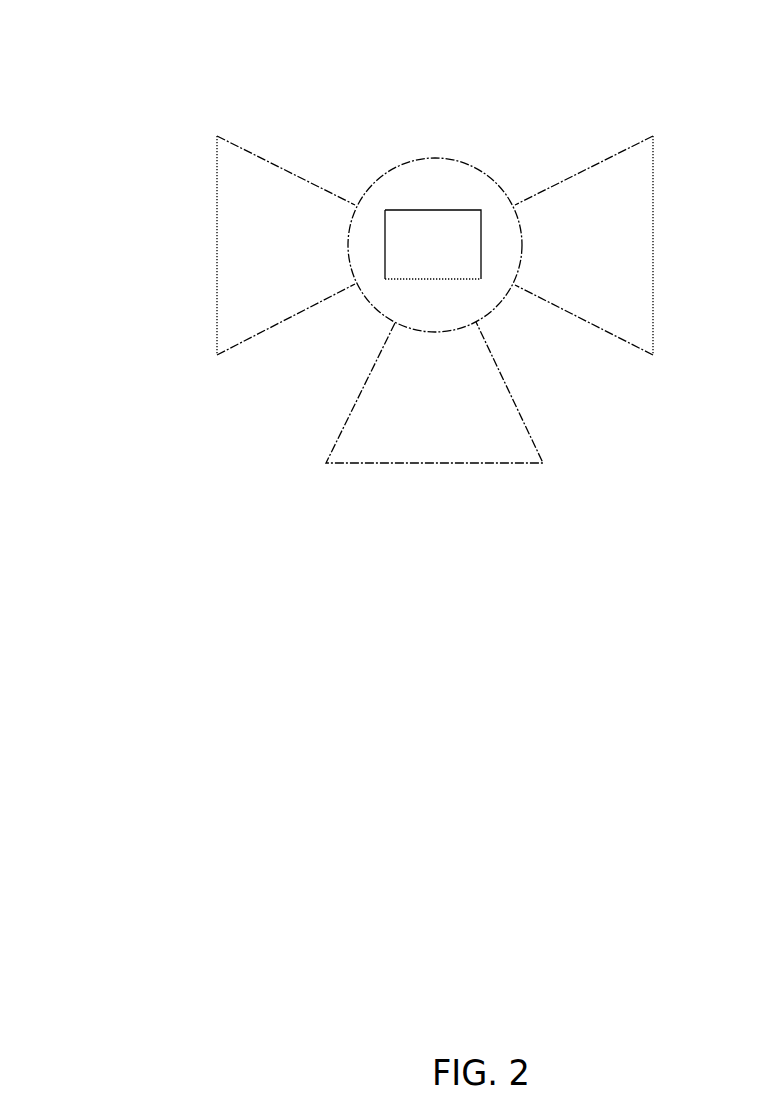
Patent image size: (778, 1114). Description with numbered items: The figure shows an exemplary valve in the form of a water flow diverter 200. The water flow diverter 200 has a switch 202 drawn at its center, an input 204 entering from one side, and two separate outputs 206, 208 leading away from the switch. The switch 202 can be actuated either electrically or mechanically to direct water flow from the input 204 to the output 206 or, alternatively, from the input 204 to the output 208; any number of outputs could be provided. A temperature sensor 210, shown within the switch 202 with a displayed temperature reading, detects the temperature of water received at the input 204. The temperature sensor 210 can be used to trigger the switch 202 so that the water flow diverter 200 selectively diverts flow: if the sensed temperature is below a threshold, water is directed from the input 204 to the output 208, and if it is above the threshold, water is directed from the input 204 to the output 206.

The water flow diverter 200 is at (74, 651).
The switch 202 is at (447, 158).
The input 204 is at (634, 143).
The output 206 is at (280, 157).
The output 208 is at (435, 463).
The temperature sensor 210 is at (432, 280).